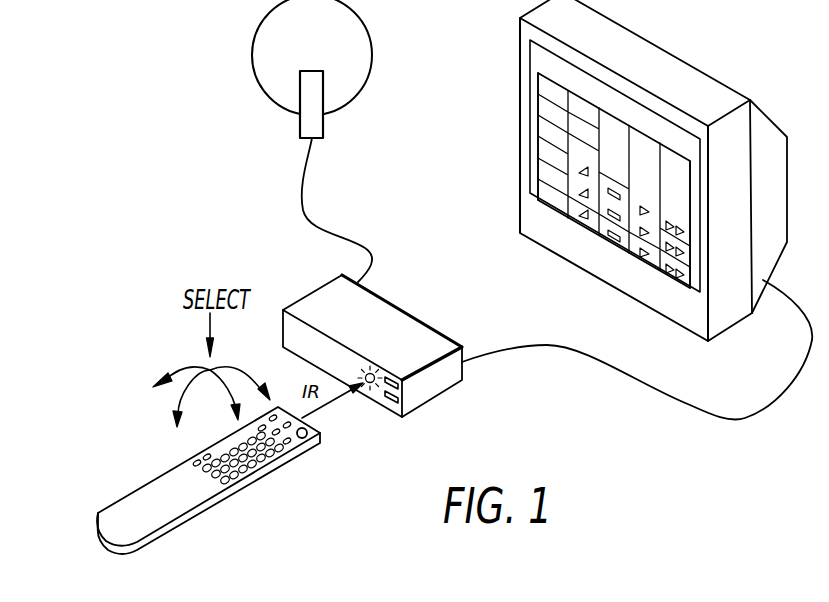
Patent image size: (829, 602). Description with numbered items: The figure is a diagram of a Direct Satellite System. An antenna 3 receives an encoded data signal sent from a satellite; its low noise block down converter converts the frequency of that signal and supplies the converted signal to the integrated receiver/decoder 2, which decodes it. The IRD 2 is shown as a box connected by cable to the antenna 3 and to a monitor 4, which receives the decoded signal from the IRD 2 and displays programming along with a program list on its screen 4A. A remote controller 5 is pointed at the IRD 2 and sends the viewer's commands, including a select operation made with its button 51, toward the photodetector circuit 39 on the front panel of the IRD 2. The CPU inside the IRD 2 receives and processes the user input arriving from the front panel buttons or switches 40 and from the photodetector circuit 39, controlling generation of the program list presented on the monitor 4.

The integrated receiver/decoder 2 is at (547, 365).
The antenna 3 is at (370, 53).
The monitor 4 is at (629, 170).
The television screen displaying program guide 4A is at (543, 63).
The remote controller 5 is at (218, 496).
The photodetector circuit 39 is at (390, 399).
The front panel buttons or switches 40 is at (352, 368).
The select button on remote control 51 is at (320, 433).